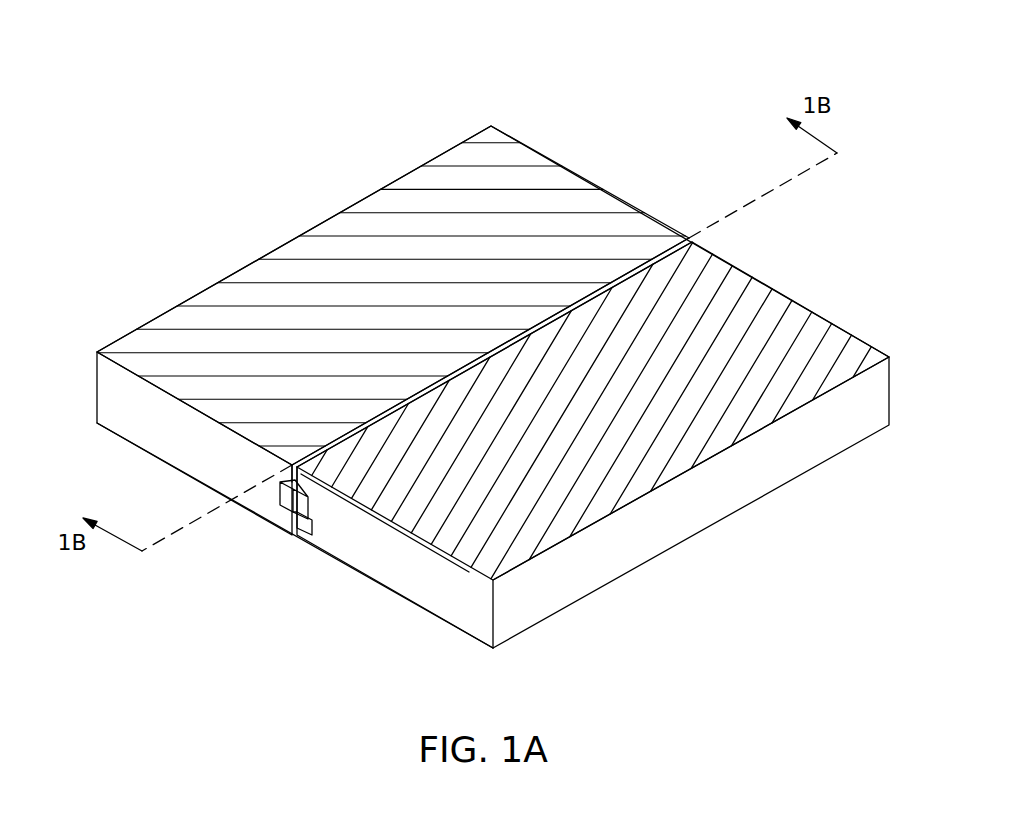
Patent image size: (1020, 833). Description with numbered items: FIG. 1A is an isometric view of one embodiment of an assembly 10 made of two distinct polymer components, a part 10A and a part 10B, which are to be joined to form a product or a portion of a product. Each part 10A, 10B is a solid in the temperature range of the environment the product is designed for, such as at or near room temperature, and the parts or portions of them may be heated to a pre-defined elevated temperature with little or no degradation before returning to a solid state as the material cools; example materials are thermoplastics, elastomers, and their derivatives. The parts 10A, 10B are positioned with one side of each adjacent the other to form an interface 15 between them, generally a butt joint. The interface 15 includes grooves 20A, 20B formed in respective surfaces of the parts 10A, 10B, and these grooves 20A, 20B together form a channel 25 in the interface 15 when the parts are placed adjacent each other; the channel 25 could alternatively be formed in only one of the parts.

The assembly 10 is at (468, 72).
The part 10A is at (297, 250).
The part 10B is at (813, 330).
The interface 15 is at (684, 218).
The groove 20A is at (280, 490).
The groove 20B is at (307, 513).
The channel 25 is at (278, 549).